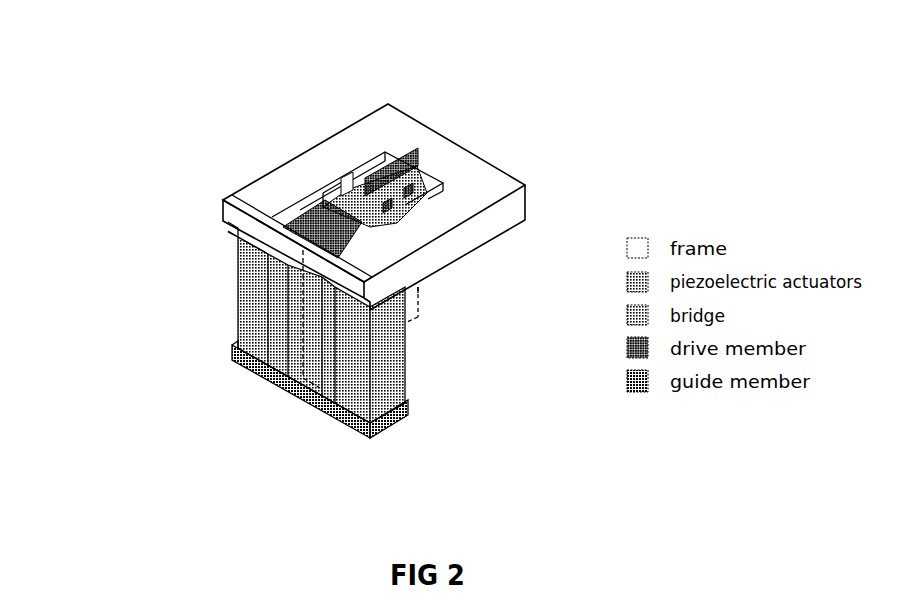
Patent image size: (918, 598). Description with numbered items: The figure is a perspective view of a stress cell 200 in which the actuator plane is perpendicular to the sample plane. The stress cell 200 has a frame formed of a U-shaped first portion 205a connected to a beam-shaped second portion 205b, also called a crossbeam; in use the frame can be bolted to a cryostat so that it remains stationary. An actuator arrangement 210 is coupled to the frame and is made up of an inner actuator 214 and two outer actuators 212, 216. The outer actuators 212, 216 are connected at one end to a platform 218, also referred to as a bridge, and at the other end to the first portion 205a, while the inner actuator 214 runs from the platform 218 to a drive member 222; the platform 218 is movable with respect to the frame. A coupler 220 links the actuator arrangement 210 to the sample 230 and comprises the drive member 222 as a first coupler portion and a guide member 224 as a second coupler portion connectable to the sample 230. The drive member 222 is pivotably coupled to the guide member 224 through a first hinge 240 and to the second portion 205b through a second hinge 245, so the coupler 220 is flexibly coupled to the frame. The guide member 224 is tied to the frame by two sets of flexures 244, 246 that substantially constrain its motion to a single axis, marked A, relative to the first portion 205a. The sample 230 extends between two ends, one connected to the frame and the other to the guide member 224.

The stress cell 200 is at (98, 67).
The first portion of frame 205a is at (487, 190).
The second portion of frame 205b is at (237, 218).
The actuator arrangement 210 is at (77, 375).
The outer actuator 212 is at (240, 284).
The inner actuator 214 is at (232, 350).
The outer actuator 216 is at (312, 400).
The platform 218 is at (388, 422).
The coupler 220 is at (376, 198).
The drive member 222 is at (289, 190).
The guide member 224 is at (347, 176).
The sample 230 is at (402, 157).
The first hinge 240 is at (328, 182).
The flexures 244 is at (393, 216).
The second hinge 245 is at (237, 237).
The flexures 246 is at (393, 187).
The axis A is at (420, 320).